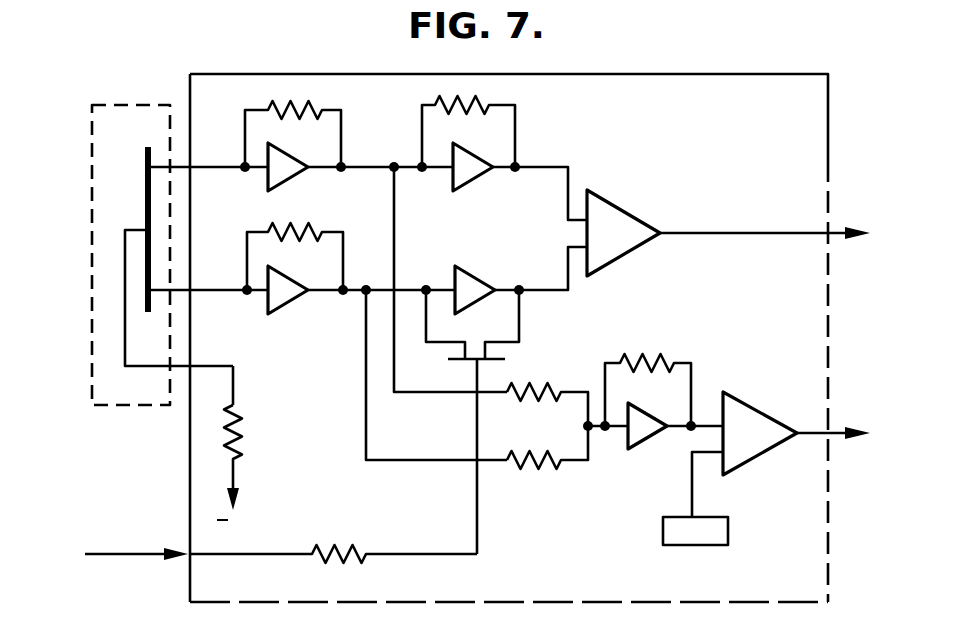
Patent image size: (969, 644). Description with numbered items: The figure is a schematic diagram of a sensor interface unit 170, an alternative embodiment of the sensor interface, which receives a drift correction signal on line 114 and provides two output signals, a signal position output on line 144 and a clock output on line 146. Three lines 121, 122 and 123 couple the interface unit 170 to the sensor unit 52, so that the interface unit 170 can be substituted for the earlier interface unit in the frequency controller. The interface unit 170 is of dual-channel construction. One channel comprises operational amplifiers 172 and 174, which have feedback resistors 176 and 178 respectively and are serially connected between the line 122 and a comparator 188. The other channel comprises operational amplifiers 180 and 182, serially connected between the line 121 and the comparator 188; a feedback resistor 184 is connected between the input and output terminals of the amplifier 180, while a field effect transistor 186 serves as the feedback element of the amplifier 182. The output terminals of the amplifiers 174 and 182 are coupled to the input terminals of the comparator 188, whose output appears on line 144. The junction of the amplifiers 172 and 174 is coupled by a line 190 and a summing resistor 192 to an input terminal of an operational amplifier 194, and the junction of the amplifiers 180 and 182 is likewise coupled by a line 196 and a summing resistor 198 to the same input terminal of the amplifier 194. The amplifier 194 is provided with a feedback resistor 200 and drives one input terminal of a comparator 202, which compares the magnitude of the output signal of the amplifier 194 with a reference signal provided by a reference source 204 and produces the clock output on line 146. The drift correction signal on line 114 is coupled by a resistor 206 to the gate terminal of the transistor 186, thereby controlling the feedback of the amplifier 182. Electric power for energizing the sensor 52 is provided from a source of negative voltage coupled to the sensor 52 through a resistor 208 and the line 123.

The sensor interface unit 170 is at (430, 74).
The sensor unit 52 is at (139, 412).
The line 122 is at (205, 168).
The line 121 is at (205, 290).
The line 123 is at (200, 366).
The operational amplifier 172 is at (305, 180).
The operational amplifier 174 is at (478, 180).
The feedback resistor 176 is at (316, 100).
The feedback resistor 178 is at (477, 101).
The operational amplifier 180 is at (293, 303).
The operational amplifier 182 is at (474, 270).
The feedback resistor 184 is at (320, 221).
The field effect transistor 186 is at (463, 362).
The comparator 188 is at (612, 205).
The line 190 is at (456, 393).
The summing resistor 192 is at (536, 380).
The operational amplifier 194 is at (652, 446).
The line 196 is at (445, 462).
The summing resistor 198 is at (548, 470).
The feedback resistor 200 is at (649, 360).
The comparator 202 is at (741, 392).
The reference source 204 is at (707, 547).
The resistor 206 is at (325, 546).
The resistor 208 is at (240, 437).
The line 144 is at (803, 235).
The line 146 is at (807, 435).
The line 114 is at (128, 556).